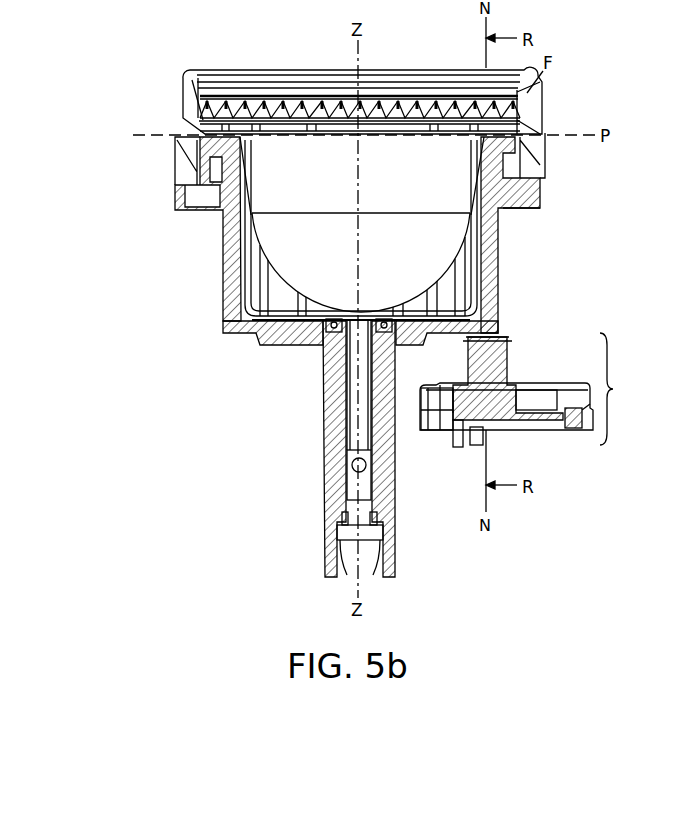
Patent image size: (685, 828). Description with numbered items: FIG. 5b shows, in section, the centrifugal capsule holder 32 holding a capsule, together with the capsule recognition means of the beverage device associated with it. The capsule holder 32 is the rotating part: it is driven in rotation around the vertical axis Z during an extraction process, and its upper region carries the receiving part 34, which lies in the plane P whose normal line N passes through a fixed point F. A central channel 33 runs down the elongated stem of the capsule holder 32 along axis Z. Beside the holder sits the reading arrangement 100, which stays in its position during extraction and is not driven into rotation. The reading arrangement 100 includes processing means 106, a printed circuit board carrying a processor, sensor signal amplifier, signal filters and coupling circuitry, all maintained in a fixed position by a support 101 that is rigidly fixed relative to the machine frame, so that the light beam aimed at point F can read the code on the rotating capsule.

The capsule holder 32 is at (231, 236).
The central channel 33 is at (363, 382).
The receiving part 34 is at (239, 134).
The reading arrangement 100 is at (536, 407).
The support 101 is at (437, 428).
The processing means 106 is at (548, 423).